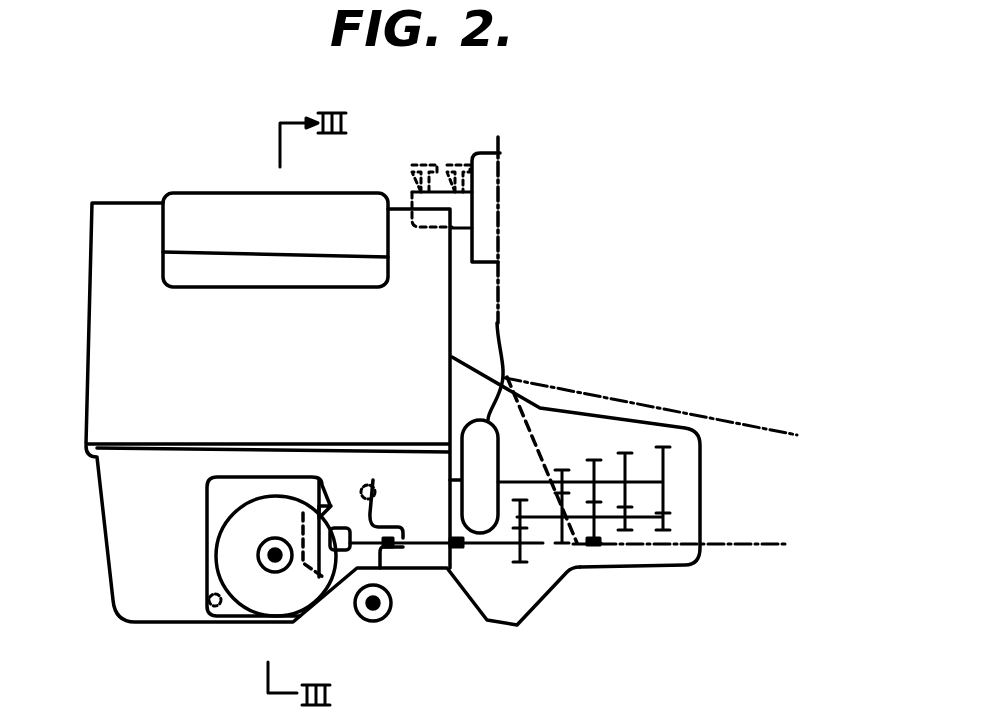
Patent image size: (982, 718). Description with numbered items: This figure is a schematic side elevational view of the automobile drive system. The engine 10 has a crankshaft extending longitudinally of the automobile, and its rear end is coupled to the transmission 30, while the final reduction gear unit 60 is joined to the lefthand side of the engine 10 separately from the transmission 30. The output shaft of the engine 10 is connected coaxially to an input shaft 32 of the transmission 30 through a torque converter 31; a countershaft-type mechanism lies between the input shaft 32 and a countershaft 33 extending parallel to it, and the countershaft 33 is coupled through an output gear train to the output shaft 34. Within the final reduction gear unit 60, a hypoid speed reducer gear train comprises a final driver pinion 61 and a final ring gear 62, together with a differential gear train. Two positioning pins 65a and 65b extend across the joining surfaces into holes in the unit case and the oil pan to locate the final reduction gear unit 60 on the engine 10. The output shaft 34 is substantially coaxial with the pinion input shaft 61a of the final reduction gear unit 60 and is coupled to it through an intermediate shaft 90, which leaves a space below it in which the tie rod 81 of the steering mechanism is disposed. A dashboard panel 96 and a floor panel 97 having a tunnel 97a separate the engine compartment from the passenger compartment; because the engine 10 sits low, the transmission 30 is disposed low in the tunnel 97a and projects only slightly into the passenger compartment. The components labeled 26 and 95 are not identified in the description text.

The engine 10 is at (107, 343).
The control unit housing 26 is at (220, 212).
The transmission 30 is at (593, 425).
The torque converter 31 is at (503, 377).
The input shaft 32 is at (640, 477).
The countershaft 33 is at (638, 523).
The output shaft 34 is at (503, 547).
The final reduction gear unit 60 is at (228, 603).
The final driver pinion 61 is at (318, 482).
The input shaft of the final reduction gear unit 61a is at (372, 508).
The final ring gear 62 is at (242, 515).
The positioning pin 65a is at (372, 485).
The positioning pin 65b is at (207, 598).
The tie rod 81 is at (382, 622).
The intermediate shaft 90 is at (429, 546).
The connector 95 is at (453, 160).
The dashboard panel 96 is at (498, 272).
The floor panel 97 is at (763, 545).
The tunnel 97a is at (740, 465).